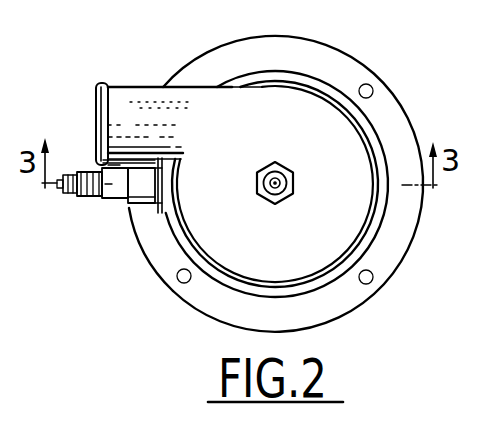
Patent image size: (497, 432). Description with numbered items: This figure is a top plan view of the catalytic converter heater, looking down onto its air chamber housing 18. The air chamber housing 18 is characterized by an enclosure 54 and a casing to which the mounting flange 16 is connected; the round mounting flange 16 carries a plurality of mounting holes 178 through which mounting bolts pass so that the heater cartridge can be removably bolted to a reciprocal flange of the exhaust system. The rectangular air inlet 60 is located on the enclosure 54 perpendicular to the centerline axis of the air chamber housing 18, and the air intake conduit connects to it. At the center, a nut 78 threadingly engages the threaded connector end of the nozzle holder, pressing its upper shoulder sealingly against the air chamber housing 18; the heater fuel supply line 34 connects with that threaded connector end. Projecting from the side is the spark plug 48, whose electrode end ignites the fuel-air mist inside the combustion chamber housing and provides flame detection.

The mounting flange 16 is at (250, 48).
The air chamber housing 18 is at (159, 278).
The enclosure 54 is at (297, 87).
The mounting holes 178 is at (372, 88).
The air inlet 60 is at (149, 85).
The spark plug 48 is at (117, 207).
The nut 78 is at (268, 163).
The heater fuel supply line 34 is at (272, 207).